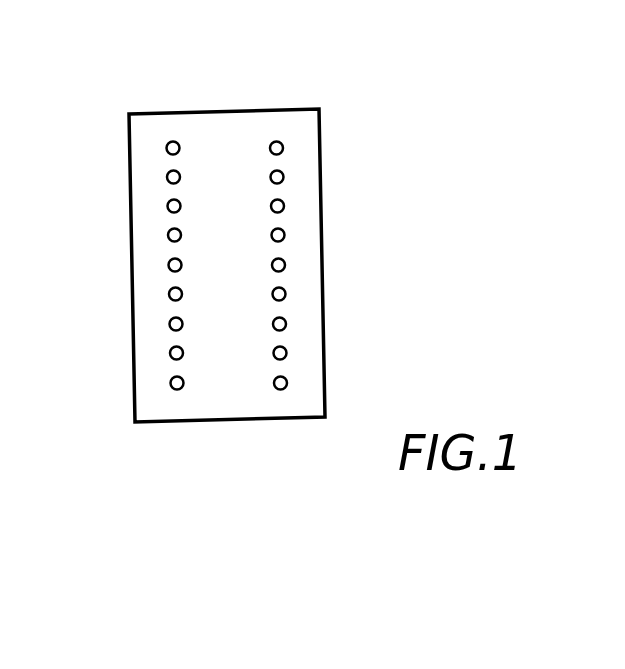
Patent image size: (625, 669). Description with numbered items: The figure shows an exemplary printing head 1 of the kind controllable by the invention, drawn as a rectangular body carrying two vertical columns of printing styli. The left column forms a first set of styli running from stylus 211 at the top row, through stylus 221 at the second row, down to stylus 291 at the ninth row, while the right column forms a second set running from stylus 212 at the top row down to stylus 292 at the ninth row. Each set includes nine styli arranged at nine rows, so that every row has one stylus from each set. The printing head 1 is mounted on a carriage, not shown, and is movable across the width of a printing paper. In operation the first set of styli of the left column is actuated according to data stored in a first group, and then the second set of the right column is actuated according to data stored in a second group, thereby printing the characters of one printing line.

The printing head 1 is at (218, 110).
The printing stylus 211 is at (166, 149).
The printing stylus 212 is at (284, 147).
The printing stylus 221 is at (167, 178).
The printing stylus 291 is at (170, 383).
The printing stylus 292 is at (288, 383).